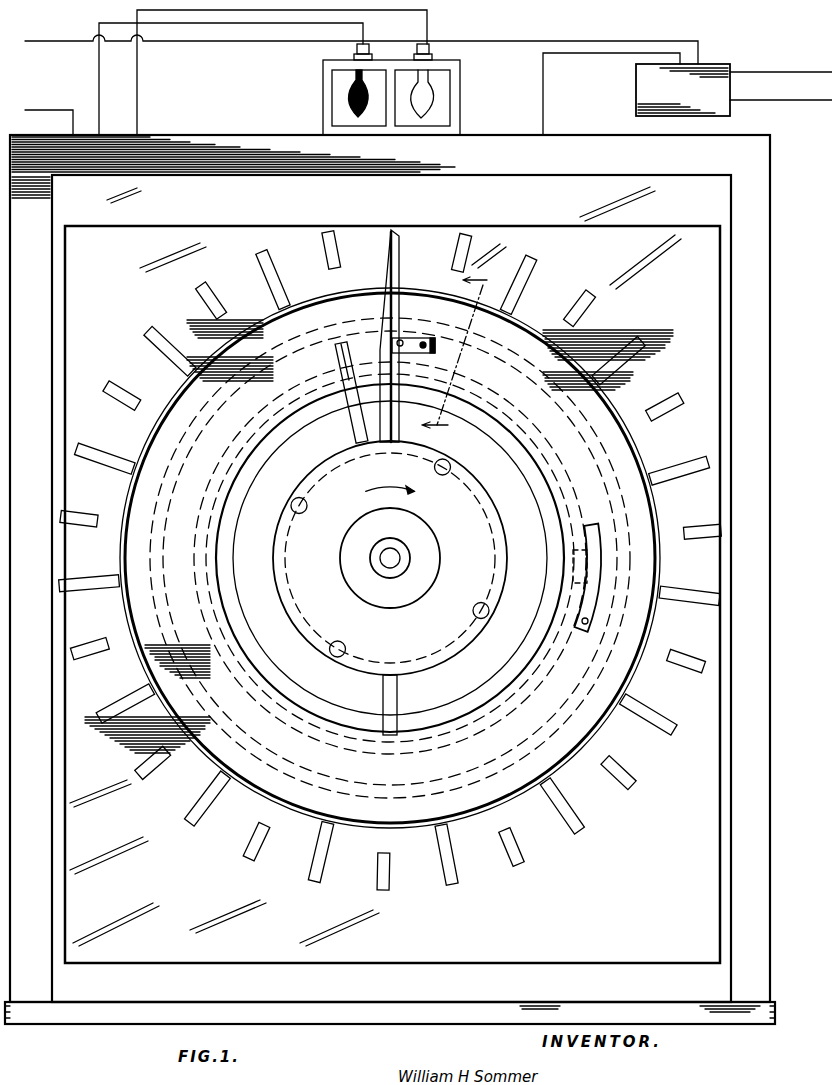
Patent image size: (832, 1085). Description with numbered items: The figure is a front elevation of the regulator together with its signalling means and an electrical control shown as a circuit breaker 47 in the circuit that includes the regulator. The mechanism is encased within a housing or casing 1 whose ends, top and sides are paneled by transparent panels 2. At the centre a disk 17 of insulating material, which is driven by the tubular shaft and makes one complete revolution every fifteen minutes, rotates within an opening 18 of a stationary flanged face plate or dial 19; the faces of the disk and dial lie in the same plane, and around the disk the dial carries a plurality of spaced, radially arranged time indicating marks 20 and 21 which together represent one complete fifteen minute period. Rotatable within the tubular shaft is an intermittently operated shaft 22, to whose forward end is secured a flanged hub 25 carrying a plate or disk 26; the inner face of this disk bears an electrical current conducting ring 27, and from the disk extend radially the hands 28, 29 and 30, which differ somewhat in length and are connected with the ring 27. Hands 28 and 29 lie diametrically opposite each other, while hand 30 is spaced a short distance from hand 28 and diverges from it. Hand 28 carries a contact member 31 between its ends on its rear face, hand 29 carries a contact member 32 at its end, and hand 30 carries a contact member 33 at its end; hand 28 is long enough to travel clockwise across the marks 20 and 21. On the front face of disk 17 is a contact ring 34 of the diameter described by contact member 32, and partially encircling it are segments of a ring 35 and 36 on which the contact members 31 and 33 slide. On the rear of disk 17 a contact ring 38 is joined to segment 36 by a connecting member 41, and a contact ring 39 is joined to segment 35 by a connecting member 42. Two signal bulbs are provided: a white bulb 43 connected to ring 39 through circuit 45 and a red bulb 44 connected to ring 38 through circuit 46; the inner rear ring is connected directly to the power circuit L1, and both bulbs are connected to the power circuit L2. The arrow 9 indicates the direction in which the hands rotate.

The housing or casing 1 is at (410, 1022).
The transparent panels 2 is at (391, 588).
The direction of rotation arrow 9 is at (454, 352).
The disk 17 is at (378, 813).
The opening 18 is at (655, 613).
The face plate or dial 19 is at (135, 868).
The time indicating marks 20 is at (400, 232).
The time indicating marks 21 is at (466, 243).
The intermittently operated shaft 22 is at (380, 558).
The flanged hub 25 is at (420, 595).
The plate or disk 26 is at (463, 523).
The electrical current conducting ring 27 is at (305, 607).
The hand 28 is at (383, 300).
The hand 29 is at (396, 698).
The hand 30 is at (352, 420).
The contact member 31 is at (380, 325).
The contact member 32 is at (393, 722).
The contact member 33 is at (342, 356).
The contact ring 34 is at (477, 703).
The ring segment 35 is at (408, 335).
The ring segment 36 is at (515, 380).
The contact ring 38 is at (585, 530).
The contact ring 39 is at (628, 562).
The connecting member 41 is at (453, 360).
The connecting member 42 is at (413, 327).
The electric light bulb 43 is at (448, 97).
The electric light bulb 44 is at (345, 98).
The circuit 45 is at (400, 17).
The circuit 46 is at (262, 25).
The relay 47 is at (645, 80).
The power circuit L1 is at (45, 106).
The power circuit L2 is at (50, 40).